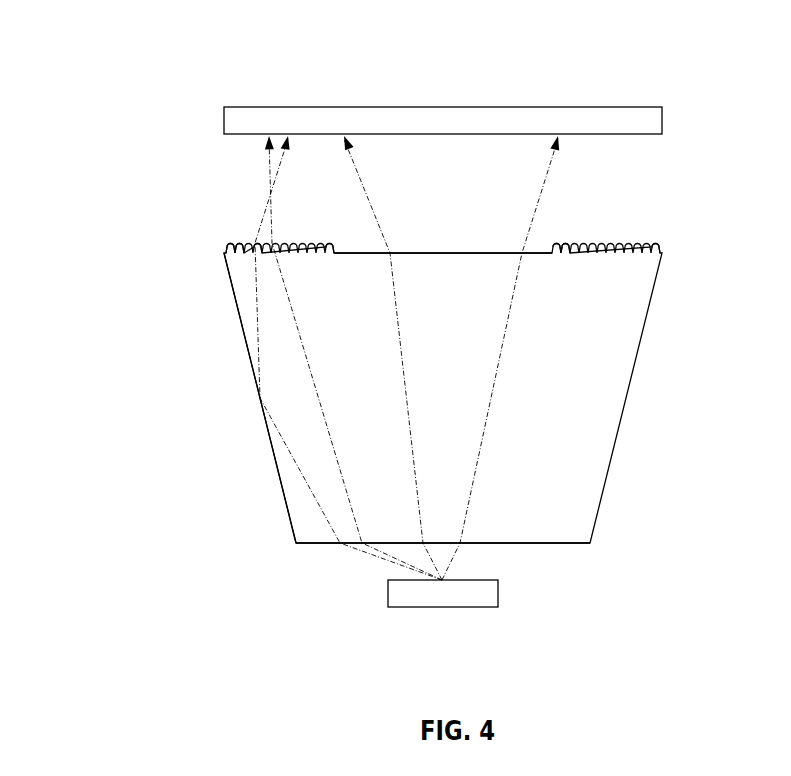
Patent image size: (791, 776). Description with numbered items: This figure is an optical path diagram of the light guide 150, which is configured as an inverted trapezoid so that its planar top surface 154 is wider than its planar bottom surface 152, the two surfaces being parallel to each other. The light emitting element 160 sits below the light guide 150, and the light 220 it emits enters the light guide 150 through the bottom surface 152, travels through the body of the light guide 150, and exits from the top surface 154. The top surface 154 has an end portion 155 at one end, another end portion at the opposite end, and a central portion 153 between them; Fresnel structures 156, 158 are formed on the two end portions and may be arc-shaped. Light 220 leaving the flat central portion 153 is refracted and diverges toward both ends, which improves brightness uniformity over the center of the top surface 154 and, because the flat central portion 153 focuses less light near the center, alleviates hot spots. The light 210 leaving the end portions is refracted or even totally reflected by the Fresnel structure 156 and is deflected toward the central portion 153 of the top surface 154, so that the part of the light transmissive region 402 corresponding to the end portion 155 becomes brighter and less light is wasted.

The light transmissive region 402 is at (223, 108).
The light emitted from the end portions 210 is at (270, 158).
The light emitted by the light emitting element 220 is at (364, 193).
The top surface 154 is at (455, 217).
The central portion 153 is at (462, 252).
The Fresnel structure 156 is at (255, 254).
The Fresnel structure 158 is at (602, 253).
The end portion 155 is at (287, 267).
The light guide 150 is at (262, 405).
The bottom surface 152 is at (335, 543).
The light emitting element 160 is at (388, 596).